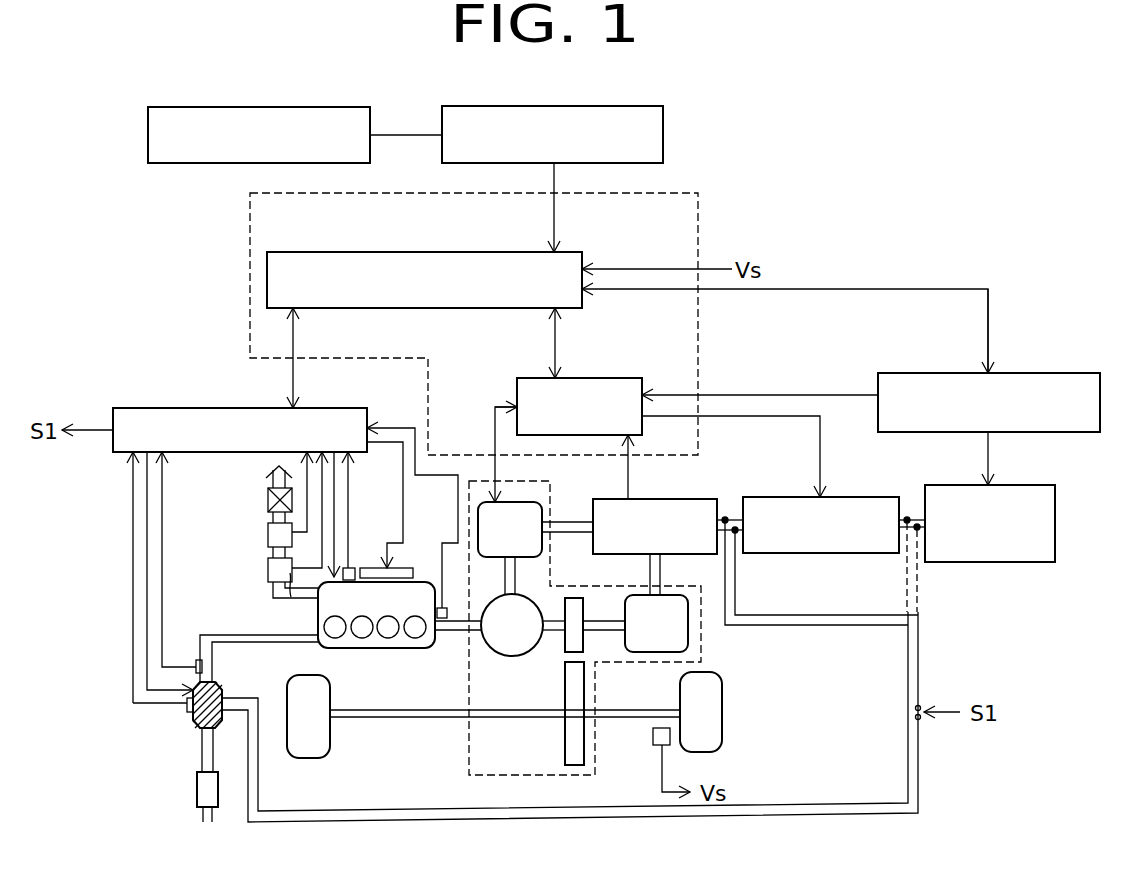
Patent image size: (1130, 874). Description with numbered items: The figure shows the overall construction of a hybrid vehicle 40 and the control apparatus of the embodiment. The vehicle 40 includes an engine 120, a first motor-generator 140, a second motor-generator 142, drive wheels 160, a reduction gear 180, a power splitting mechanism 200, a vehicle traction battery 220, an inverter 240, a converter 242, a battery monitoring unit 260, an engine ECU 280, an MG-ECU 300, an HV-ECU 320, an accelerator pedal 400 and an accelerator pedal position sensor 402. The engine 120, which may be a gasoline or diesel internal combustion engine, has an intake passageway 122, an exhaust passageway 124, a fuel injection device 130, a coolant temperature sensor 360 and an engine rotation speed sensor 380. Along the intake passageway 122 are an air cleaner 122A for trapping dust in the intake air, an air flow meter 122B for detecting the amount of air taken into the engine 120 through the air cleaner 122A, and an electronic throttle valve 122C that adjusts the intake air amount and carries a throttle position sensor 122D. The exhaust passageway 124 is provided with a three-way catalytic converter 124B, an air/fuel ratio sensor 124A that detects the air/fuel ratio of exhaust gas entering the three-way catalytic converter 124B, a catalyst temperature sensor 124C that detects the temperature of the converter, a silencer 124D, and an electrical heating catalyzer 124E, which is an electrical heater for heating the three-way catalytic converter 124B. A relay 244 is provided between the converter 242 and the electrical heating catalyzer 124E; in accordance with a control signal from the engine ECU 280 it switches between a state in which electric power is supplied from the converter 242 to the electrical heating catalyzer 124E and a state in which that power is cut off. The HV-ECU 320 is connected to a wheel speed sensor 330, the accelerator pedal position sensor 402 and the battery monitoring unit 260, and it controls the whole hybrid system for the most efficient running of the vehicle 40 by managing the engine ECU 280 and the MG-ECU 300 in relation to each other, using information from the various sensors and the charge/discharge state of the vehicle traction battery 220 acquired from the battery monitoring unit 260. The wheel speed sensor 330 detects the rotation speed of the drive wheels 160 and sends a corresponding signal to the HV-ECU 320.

The vehicle 40 is at (951, 203).
The engine 120 is at (396, 652).
The intake passageway 122 is at (273, 598).
The air cleaner 122A is at (268, 501).
The air flow meter 122B is at (268, 536).
The electronic throttle valve 122C is at (268, 568).
The throttle position sensor 122D is at (285, 598).
The exhaust passageway 124 is at (250, 643).
The air/fuel ratio sensor 124A is at (196, 660).
The three-way catalytic converter 124B is at (201, 745).
The catalyst temperature sensor 124C is at (190, 708).
The silencer 124D is at (197, 793).
The electrical heating catalyzer 124E is at (187, 716).
The fuel injection device 130 is at (400, 568).
The first motor-generator 140 is at (486, 500).
The second motor-generator 142 is at (688, 642).
The drive wheels 160 is at (316, 758).
The reduction gear 180 is at (594, 666).
The power splitting mechanism 200 is at (512, 657).
The vehicle traction battery 220 is at (1010, 562).
The inverter 240 is at (705, 484).
The converter 242 is at (873, 483).
The relay 244 is at (925, 702).
The battery monitoring unit 260 is at (1088, 356).
The engine ECU 280 is at (183, 408).
The MG-ECU 300 is at (630, 359).
The HV-ECU 320 is at (438, 252).
The wheel speed sensor 330 is at (653, 733).
The coolant temperature sensor 360 is at (350, 568).
The engine rotation speed sensor 380 is at (442, 620).
The accelerator pedal 400 is at (315, 107).
The accelerator pedal position sensor 402 is at (608, 106).